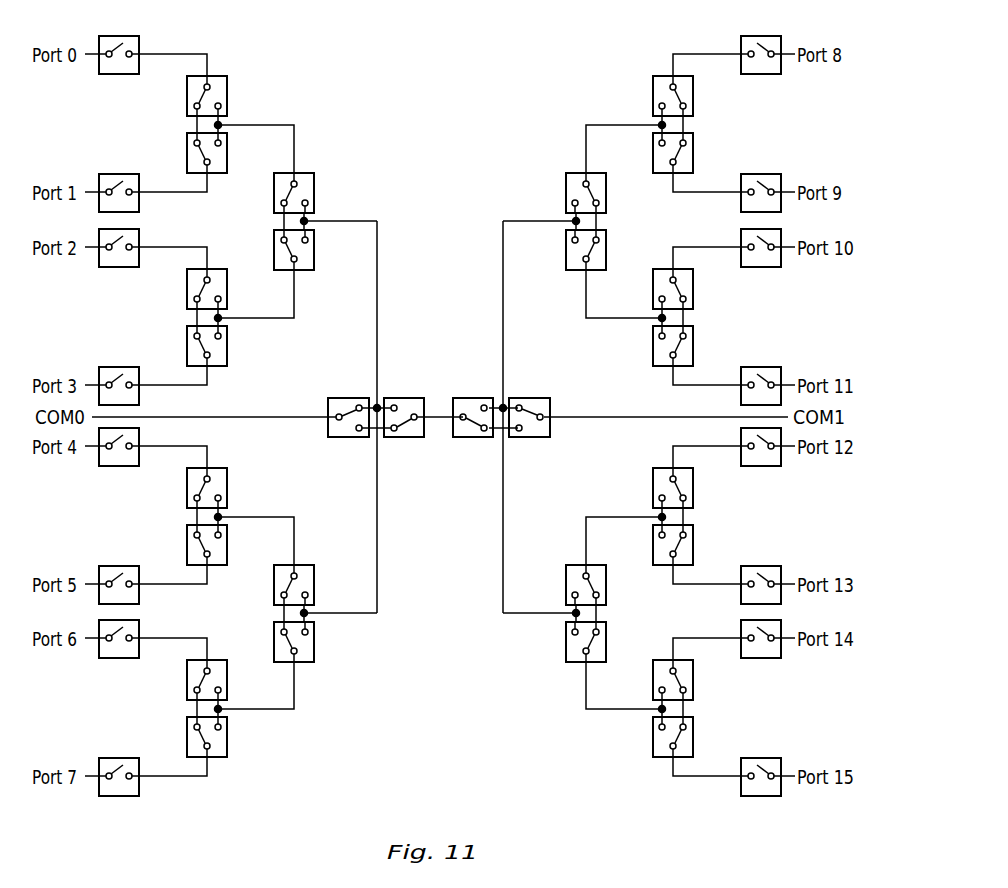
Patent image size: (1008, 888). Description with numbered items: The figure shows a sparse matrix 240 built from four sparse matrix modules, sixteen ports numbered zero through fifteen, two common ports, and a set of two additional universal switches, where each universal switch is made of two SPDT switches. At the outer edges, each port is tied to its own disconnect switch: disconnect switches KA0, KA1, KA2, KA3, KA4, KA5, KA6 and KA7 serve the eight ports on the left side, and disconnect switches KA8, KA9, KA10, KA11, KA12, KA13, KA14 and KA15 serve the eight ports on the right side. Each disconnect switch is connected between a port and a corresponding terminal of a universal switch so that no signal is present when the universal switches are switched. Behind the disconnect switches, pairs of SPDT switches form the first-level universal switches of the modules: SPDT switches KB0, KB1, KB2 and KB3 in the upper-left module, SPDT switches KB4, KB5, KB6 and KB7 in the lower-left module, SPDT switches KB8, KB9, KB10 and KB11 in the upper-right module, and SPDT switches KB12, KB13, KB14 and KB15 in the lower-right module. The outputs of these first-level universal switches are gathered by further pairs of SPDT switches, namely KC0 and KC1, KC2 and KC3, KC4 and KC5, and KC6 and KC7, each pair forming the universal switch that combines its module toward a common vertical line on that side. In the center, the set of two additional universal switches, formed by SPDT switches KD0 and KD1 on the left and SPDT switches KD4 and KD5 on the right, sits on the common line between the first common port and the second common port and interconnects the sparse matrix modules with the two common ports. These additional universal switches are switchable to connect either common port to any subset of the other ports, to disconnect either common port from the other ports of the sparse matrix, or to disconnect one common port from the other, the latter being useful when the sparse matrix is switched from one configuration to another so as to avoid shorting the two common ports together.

The sparse matrix 240 is at (474, 51).
The disconnect switch KA0 is at (112, 68).
The disconnect switch KA1 is at (112, 180).
The disconnect switch KA2 is at (112, 261).
The disconnect switch KA3 is at (112, 373).
The disconnect switch KA4 is at (112, 460).
The disconnect switch KA5 is at (112, 572).
The disconnect switch KA6 is at (112, 652).
The disconnect switch KA7 is at (112, 764).
The disconnect switch KA8 is at (768, 68).
The disconnect switch KA9 is at (768, 180).
The disconnect switch KA10 is at (768, 260).
The disconnect switch KA11 is at (768, 373).
The disconnect switch KA12 is at (768, 460).
The disconnect switch KA13 is at (768, 572).
The disconnect switch KA14 is at (768, 652).
The disconnect switch KA15 is at (768, 764).
The SPDT switch KB0 is at (226, 96).
The SPDT switch KB1 is at (226, 153).
The SPDT switch KB2 is at (226, 289).
The SPDT switch KB3 is at (226, 346).
The SPDT switch KB4 is at (226, 488).
The SPDT switch KB5 is at (226, 545).
The SPDT switch KB6 is at (226, 680).
The SPDT switch KB7 is at (226, 737).
The SPDT switch KB8 is at (654, 96).
The SPDT switch KB9 is at (654, 153).
The SPDT switch KB10 is at (649, 289).
The SPDT switch KB11 is at (649, 346).
The SPDT switch KB12 is at (649, 488).
The SPDT switch KB13 is at (649, 545).
The SPDT switch KB14 is at (649, 680).
The SPDT switch KB15 is at (649, 737).
The SPDT switch KC0 is at (314, 193).
The SPDT switch KC1 is at (314, 250).
The SPDT switch KC2 is at (314, 585).
The SPDT switch KC3 is at (314, 642).
The SPDT switch KC4 is at (566, 193).
The SPDT switch KC5 is at (566, 250).
The SPDT switch KC6 is at (566, 585).
The SPDT switch KC7 is at (566, 642).
The SPDT switch KD0 is at (348, 405).
The SPDT switch KD1 is at (404, 405).
The SPDT switch KD4 is at (473, 430).
The SPDT switch KD5 is at (529, 430).